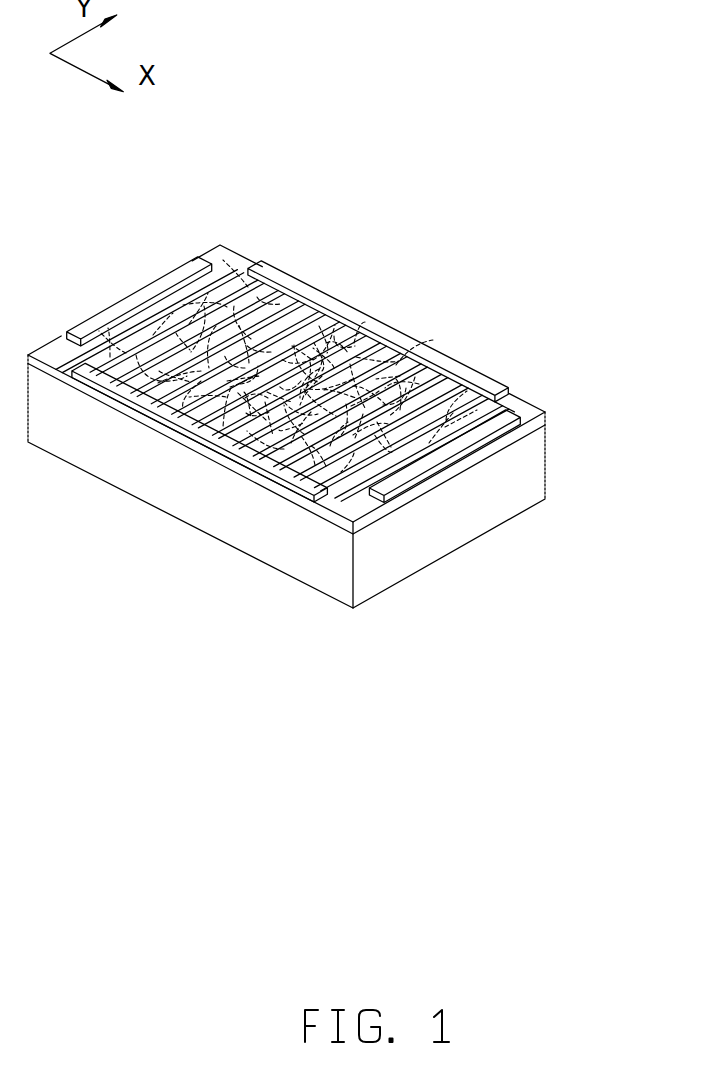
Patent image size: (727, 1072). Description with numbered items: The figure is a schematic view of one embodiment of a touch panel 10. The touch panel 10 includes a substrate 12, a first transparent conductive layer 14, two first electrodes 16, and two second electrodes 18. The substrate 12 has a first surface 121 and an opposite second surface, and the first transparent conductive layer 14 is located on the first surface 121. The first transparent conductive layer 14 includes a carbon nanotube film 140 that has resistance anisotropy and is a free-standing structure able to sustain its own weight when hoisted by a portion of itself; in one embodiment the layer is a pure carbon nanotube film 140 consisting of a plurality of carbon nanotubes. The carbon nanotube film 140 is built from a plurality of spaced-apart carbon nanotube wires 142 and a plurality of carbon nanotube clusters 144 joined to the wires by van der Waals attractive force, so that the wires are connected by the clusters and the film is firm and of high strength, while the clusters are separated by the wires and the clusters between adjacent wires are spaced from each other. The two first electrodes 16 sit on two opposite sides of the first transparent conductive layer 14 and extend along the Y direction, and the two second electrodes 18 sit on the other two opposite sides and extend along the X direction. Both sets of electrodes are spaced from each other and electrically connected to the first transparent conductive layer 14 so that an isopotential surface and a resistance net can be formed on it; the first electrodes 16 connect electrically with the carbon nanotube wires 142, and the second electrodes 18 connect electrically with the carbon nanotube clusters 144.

The touch panel 10 is at (377, 189).
The substrate 12 is at (497, 503).
The first surface 121 is at (532, 436).
The first transparent conductive layer 14 is at (527, 412).
The carbon nanotube film 140 is at (570, 360).
The carbon nanotube wires 142 is at (474, 391).
The carbon nanotube clusters 144 is at (390, 364).
The first electrodes 16 is at (140, 290).
The second electrodes 18 is at (352, 325).